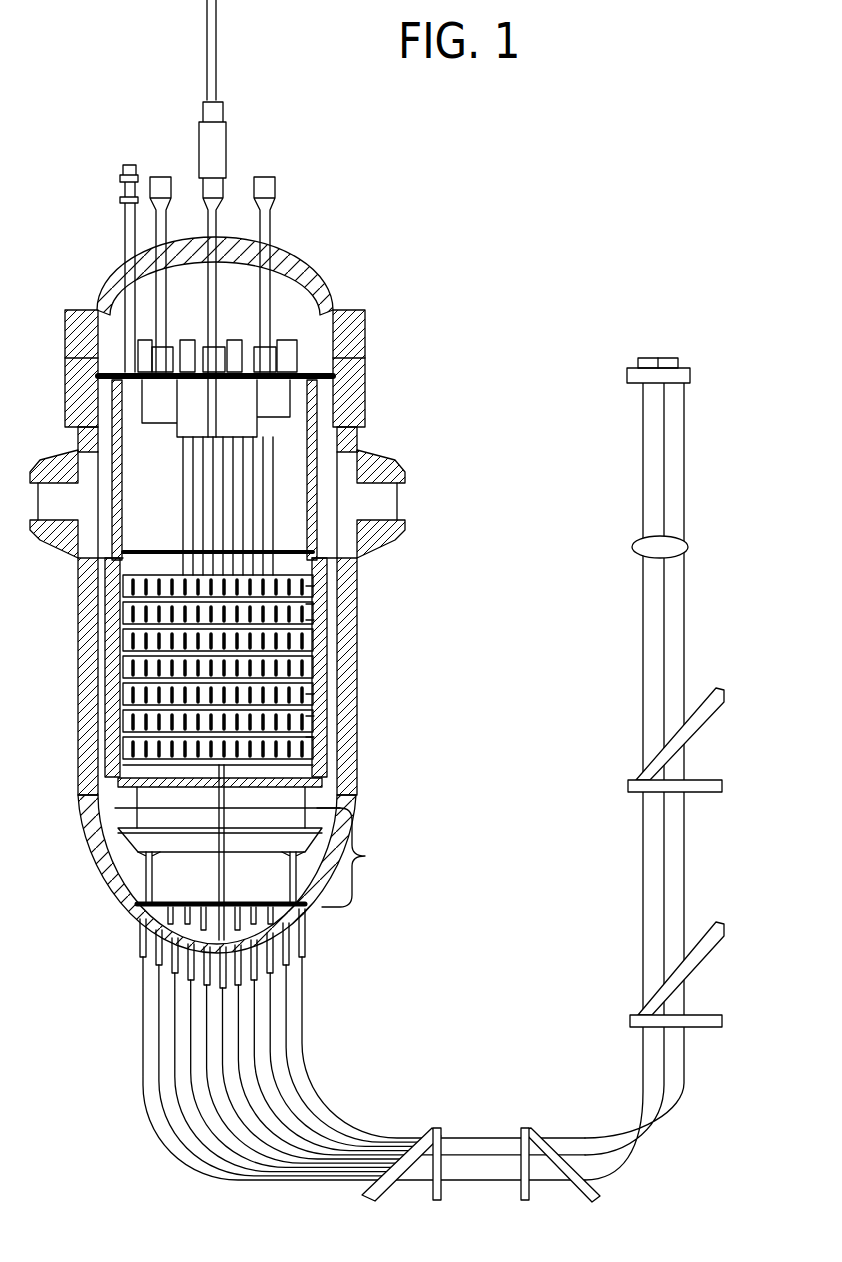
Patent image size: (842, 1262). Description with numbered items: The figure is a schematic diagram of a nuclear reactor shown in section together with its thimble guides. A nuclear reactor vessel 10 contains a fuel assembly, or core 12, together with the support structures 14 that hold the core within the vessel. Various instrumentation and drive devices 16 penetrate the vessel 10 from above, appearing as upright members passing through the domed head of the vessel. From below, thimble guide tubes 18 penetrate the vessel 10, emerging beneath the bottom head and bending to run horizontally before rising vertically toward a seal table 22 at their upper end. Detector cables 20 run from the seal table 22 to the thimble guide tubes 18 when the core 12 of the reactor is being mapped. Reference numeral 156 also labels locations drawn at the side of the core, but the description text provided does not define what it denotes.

The nuclear reactor vessel 10 is at (358, 668).
The fuel assembly (core) 12 is at (135, 669).
The support structures 14 is at (332, 356).
The instrumentation and drive devices 16 is at (287, 180).
The thimble guide tubes 18 is at (138, 963).
The detector cables 20 is at (632, 550).
The seal table 22 is at (627, 372).
The in-core detector locations 156 is at (313, 620).